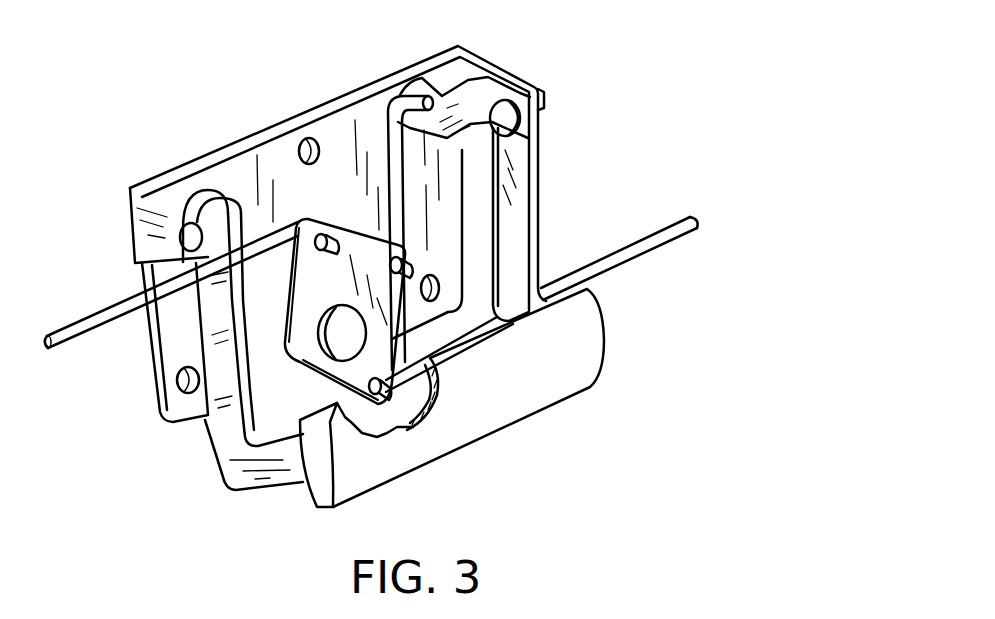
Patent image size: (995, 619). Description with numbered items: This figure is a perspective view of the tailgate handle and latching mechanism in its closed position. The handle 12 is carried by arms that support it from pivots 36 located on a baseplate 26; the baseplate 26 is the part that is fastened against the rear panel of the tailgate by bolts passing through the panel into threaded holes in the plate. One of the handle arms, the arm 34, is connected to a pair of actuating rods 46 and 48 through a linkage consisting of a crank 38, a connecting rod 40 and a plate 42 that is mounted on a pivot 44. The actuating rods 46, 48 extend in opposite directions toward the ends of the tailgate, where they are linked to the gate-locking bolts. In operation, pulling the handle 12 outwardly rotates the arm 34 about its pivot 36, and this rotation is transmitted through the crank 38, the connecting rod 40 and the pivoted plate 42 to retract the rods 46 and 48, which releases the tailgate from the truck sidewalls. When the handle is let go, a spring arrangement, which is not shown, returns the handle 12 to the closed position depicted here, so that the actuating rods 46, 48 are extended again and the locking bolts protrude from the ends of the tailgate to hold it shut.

The handle 12 is at (606, 322).
The baseplate 26 is at (173, 340).
The arm 34 is at (512, 205).
The pivot 36 is at (505, 110).
The crank 38 is at (457, 104).
The connecting rod 40 is at (397, 106).
The plate 42 is at (357, 235).
The pivot 44 is at (318, 358).
The actuating rod 46 is at (682, 240).
The actuating rod 48 is at (93, 323).